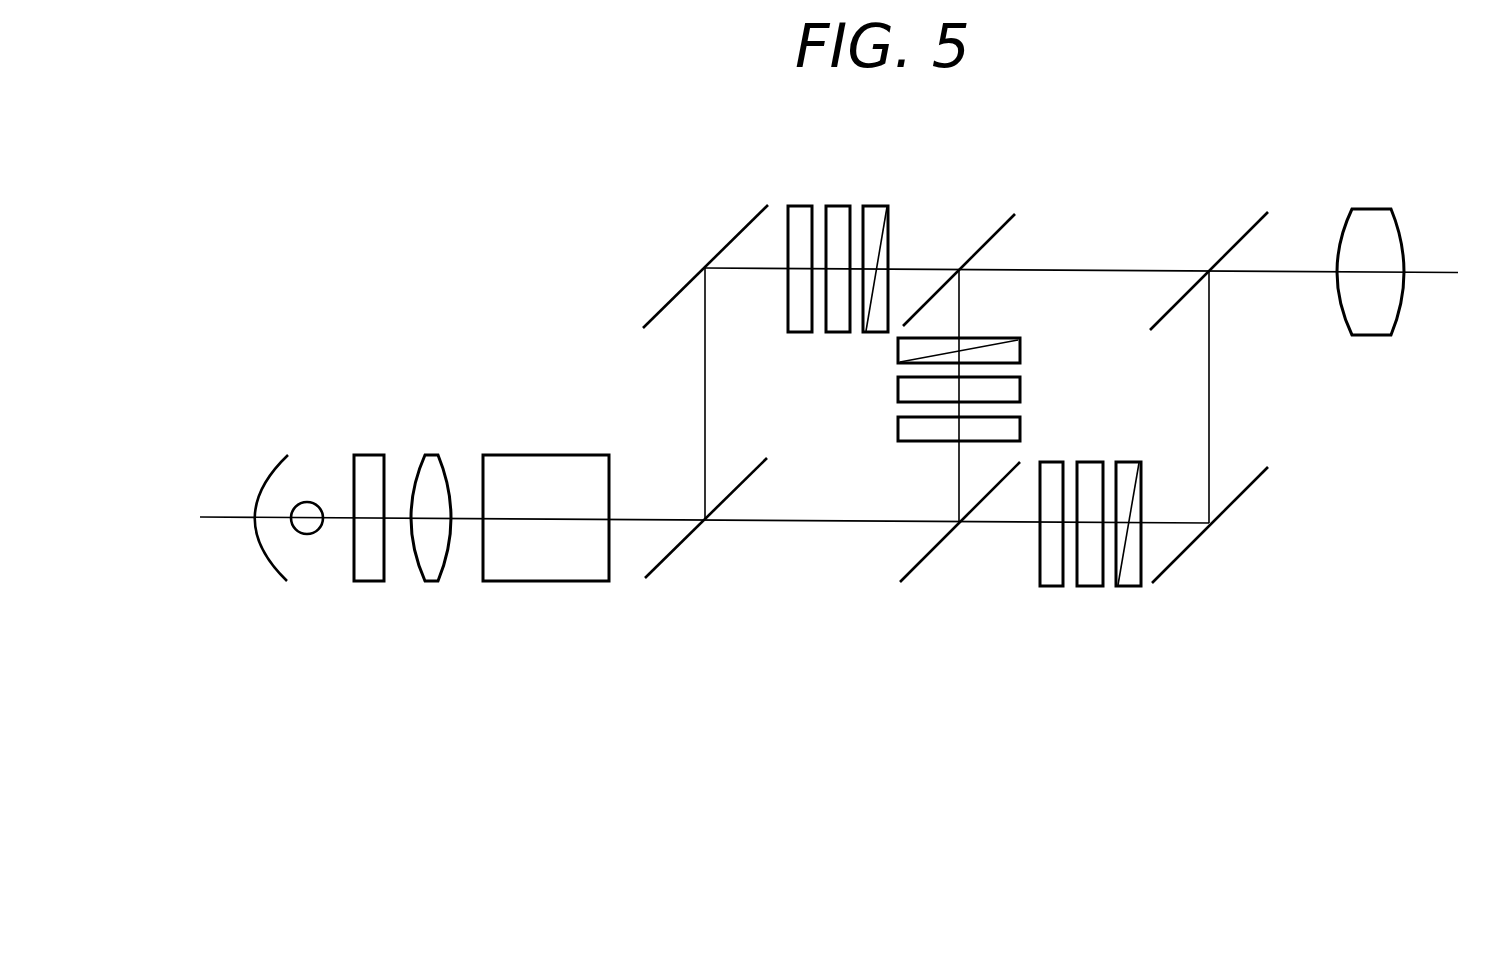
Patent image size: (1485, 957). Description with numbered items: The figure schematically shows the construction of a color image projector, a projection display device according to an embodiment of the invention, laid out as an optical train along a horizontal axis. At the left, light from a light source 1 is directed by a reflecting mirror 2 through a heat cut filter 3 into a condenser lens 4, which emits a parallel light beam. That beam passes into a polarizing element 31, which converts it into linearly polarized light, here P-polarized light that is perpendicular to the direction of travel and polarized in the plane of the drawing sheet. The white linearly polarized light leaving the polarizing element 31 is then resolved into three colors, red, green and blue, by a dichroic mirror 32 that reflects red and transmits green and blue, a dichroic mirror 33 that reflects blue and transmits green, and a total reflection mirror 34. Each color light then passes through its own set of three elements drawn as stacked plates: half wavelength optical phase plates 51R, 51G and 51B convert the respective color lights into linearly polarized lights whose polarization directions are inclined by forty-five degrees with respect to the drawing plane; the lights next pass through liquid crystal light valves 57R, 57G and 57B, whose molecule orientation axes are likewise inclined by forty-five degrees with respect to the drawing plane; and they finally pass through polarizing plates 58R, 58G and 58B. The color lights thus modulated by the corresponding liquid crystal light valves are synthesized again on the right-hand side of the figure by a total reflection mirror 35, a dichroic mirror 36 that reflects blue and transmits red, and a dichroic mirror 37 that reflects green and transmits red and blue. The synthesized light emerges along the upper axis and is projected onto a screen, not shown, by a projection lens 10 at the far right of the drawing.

The light source 1 is at (310, 501).
The reflecting mirror 2 is at (280, 462).
The heat cut filter 3 is at (376, 455).
The condenser lens 4 is at (438, 455).
The projection lens 10 is at (1355, 209).
The polarizing element 31 is at (592, 455).
The dichroic mirror 32 is at (670, 548).
The dichroic mirror 33 is at (912, 568).
The total reflection mirror 34 is at (665, 305).
The total reflection mirror 35 is at (1258, 478).
The dichroic mirror 36 is at (980, 245).
The dichroic mirror 37 is at (1230, 250).
The half wavelength optical phase plate 51R is at (801, 206).
The half wavelength optical phase plate 51G is at (1047, 586).
The half wavelength optical phase plate 51B is at (1020, 429).
The liquid crystal light valve 57R is at (843, 206).
The liquid crystal light valve 57G is at (1087, 586).
The liquid crystal light valve 57B is at (1020, 391).
The polarizing plate 58R is at (877, 207).
The polarizing plate 58G is at (1128, 586).
The polarizing plate 58B is at (1020, 350).